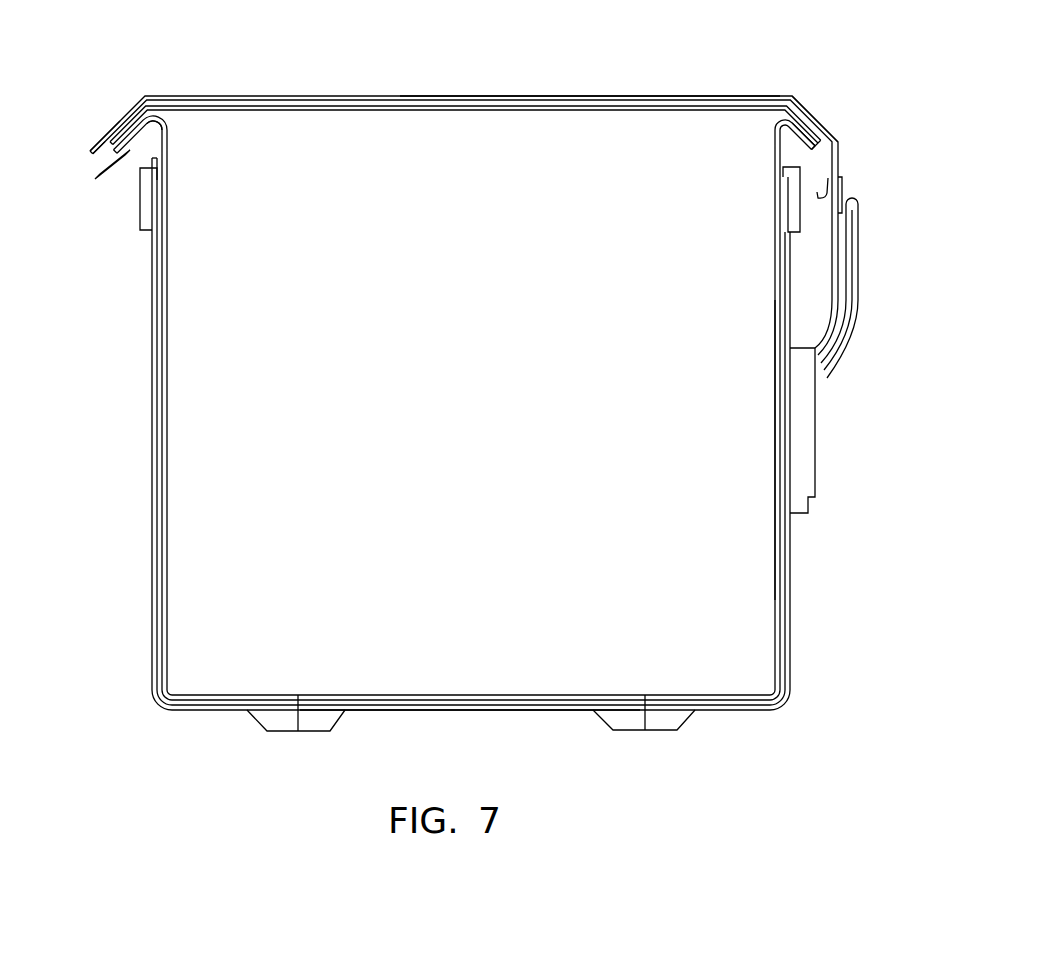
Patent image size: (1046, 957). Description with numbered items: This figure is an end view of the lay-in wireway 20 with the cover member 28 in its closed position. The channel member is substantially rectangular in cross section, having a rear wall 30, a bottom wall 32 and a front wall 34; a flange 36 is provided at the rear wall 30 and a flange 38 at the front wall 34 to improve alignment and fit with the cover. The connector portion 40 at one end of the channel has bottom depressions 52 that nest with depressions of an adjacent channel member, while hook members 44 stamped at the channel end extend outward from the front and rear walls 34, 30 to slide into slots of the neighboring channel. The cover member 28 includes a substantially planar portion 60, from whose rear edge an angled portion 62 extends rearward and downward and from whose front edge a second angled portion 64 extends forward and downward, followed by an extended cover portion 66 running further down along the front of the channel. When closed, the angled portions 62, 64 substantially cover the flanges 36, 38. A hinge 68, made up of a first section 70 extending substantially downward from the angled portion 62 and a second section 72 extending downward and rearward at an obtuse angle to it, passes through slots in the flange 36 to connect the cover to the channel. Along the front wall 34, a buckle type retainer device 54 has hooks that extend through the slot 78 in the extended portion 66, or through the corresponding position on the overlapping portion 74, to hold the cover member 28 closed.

The lay-in wireway 20 is at (113, 361).
The cover member 28 is at (584, 77).
The rear wall 30 is at (168, 405).
The bottom wall 32 is at (472, 694).
The front wall 34 is at (774, 410).
The flange 36 is at (91, 164).
The flange 38 is at (800, 135).
The connector portion 40 is at (150, 426).
The hook member 44 is at (140, 230).
The bottom depression 52 is at (257, 723).
The buckle type retainer device 54 is at (840, 333).
The planar portion 60 is at (474, 111).
The angled portion 62 is at (121, 121).
The second angled portion 64 is at (808, 114).
The extended cover portion 66 is at (830, 170).
The hinge 68 is at (160, 145).
The first section 70 is at (135, 157).
The second section 72 is at (104, 181).
The overlapping portion 74 is at (757, 94).
The slot 78 is at (826, 158).